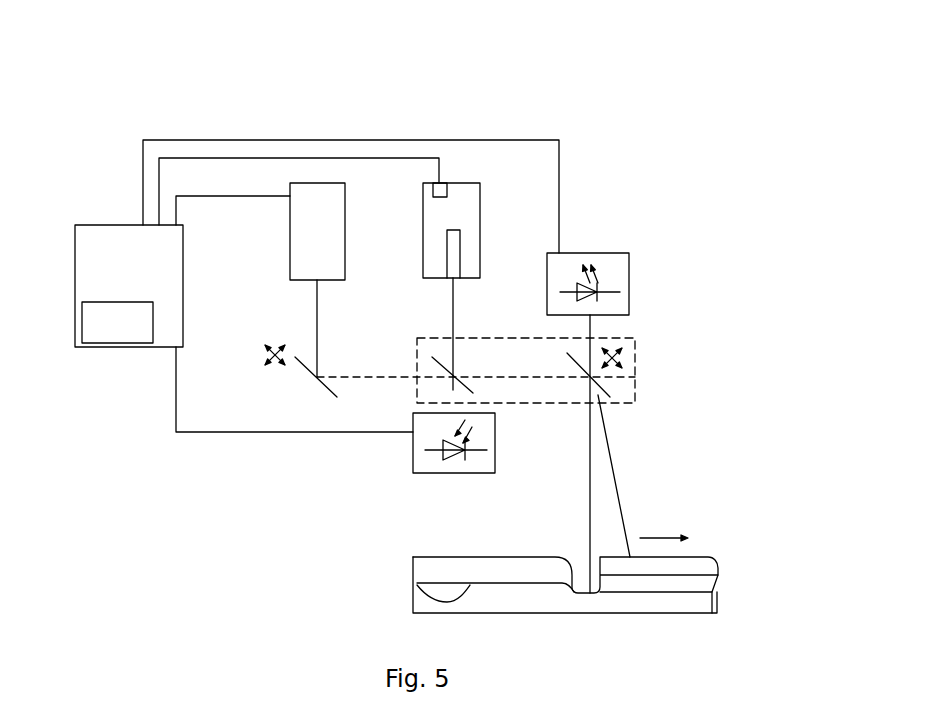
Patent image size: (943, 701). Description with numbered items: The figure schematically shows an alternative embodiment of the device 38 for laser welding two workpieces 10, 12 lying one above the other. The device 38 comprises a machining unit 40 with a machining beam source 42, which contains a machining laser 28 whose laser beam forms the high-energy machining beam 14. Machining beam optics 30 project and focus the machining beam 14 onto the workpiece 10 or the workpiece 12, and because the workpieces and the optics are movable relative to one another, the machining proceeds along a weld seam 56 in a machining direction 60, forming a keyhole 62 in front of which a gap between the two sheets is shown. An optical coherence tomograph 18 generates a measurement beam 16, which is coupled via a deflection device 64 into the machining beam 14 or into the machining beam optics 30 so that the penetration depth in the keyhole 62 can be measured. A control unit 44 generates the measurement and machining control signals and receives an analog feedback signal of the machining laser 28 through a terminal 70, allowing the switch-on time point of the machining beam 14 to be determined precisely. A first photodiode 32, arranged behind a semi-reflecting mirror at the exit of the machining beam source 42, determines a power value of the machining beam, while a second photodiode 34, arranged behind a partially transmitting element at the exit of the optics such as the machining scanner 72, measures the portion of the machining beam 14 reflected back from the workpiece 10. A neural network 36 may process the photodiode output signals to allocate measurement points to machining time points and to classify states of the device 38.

The workpiece 10 is at (700, 555).
The workpiece 12 is at (713, 607).
The machining beam 14 is at (457, 310).
The measurement beam 16 is at (318, 320).
The optical coherence tomograph 18 is at (296, 190).
The machining laser 28 is at (462, 234).
The machining beam optics 30 is at (637, 366).
The first photodiode 32 is at (418, 473).
The second photodiode 34 is at (629, 273).
The neural network 36 is at (123, 347).
The device 38 is at (209, 505).
The machining unit 40 is at (660, 170).
The machining beam source 42 is at (481, 273).
The control unit 44 is at (90, 235).
The weld seam 56 is at (413, 594).
The machining direction 60 is at (657, 537).
The keyhole 62 is at (578, 554).
The deflection device 64 is at (323, 386).
The terminal 70 is at (441, 183).
The machining scanner 72 is at (637, 383).